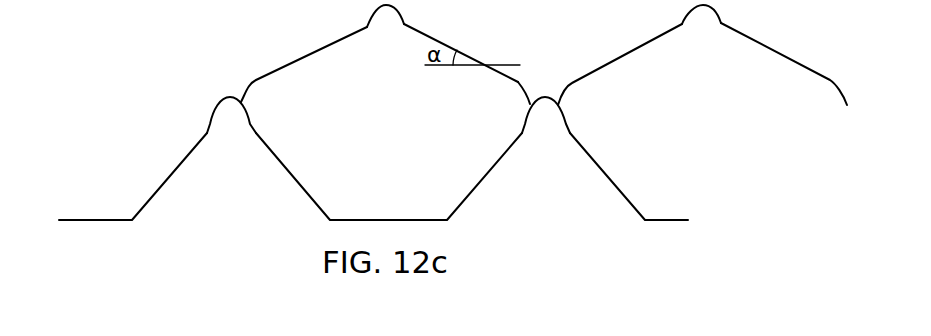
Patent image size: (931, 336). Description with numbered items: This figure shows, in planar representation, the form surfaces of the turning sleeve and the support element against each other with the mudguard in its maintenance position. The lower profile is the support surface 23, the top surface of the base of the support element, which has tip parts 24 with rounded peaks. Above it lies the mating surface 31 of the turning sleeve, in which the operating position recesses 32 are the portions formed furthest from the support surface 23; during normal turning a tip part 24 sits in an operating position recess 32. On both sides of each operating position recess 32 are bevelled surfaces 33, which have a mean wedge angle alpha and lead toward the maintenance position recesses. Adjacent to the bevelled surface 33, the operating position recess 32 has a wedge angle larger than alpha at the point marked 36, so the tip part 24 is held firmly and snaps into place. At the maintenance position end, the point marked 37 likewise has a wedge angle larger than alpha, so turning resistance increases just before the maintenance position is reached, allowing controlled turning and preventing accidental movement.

The support surface 23 is at (668, 221).
The tip part 24 is at (228, 113).
The mating surface 31 is at (292, 61).
The operating position recess 32 is at (388, 14).
The bevelled surface 33 is at (640, 52).
The wedge angle larger than mean wedge angle adjacent operating position recess 36 is at (400, 25).
The wedge angle larger than mean wedge angle at maintenance position recess end 37 is at (522, 97).